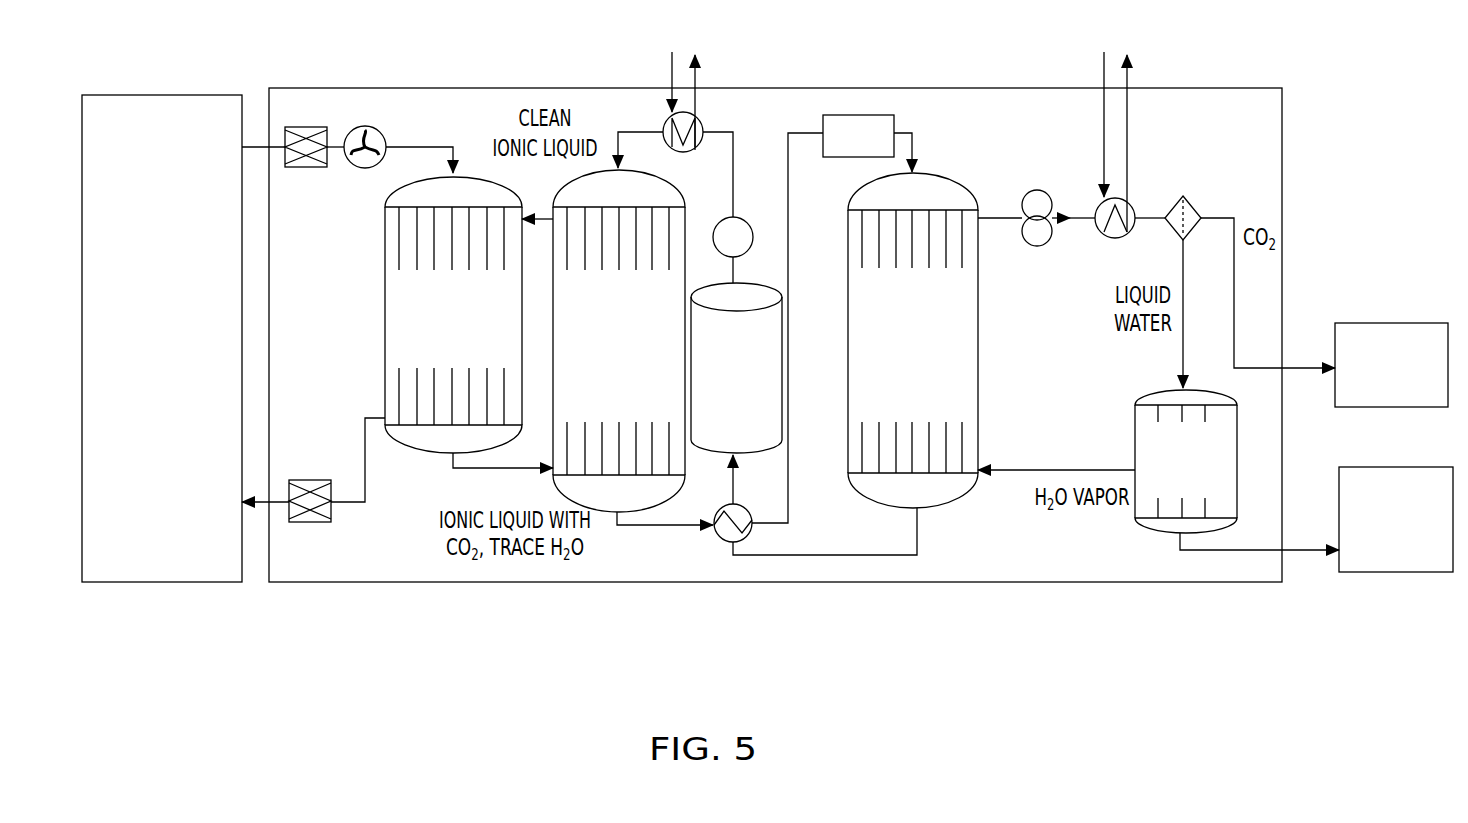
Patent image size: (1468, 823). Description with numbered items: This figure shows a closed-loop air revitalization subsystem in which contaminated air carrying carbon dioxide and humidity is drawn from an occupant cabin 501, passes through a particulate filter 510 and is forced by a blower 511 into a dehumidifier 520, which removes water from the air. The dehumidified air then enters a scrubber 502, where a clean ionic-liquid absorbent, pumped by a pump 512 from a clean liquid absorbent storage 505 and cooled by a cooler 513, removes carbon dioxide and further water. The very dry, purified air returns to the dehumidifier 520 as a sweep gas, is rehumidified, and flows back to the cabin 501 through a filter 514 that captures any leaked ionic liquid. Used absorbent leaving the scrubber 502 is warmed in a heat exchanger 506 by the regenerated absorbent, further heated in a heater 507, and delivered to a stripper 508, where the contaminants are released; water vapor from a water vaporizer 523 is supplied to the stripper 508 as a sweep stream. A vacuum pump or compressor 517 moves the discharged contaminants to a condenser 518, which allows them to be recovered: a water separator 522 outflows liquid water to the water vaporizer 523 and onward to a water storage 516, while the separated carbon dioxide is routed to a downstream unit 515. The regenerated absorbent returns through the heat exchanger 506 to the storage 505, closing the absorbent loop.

The occupant cabin 501 is at (135, 550).
The scrubber 502 is at (655, 188).
The clean liquid absorbent storage 505 is at (783, 367).
The heat exchanger 506 is at (723, 541).
The heater 507 is at (890, 116).
The stripper 508 is at (935, 175).
The filter 510 is at (290, 127).
The blower 511 is at (355, 128).
The pump 512 is at (740, 217).
The cooler 513 is at (698, 110).
The filter 514 is at (320, 523).
The Sabatier reactor 515 is at (1402, 323).
The water storage 516 is at (1367, 572).
The vacuum pump and/or compressor 517 is at (1033, 247).
The condenser 518 is at (1108, 237).
The dehumidifier 520 is at (383, 303).
The water separator 522 is at (1193, 200).
The water vaporizer 523 is at (1135, 437).